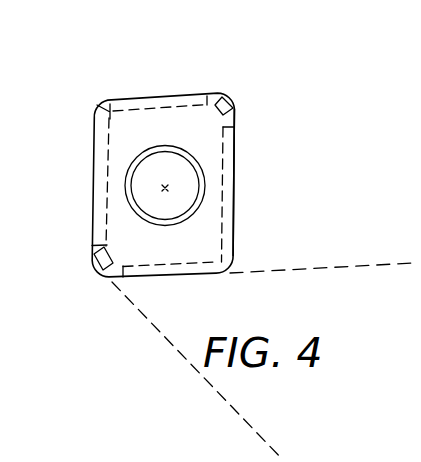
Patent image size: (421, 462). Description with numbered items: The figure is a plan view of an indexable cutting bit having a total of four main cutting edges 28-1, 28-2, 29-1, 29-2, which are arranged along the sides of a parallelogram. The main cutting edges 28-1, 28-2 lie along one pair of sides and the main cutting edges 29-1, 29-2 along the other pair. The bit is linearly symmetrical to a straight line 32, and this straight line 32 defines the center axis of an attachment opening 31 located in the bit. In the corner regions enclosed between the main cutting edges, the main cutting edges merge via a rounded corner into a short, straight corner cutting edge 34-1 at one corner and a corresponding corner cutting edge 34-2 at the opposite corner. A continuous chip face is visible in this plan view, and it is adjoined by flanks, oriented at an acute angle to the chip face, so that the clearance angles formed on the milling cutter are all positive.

The main cutting edge 28-1 is at (171, 93).
The main cutting edge 28-2 is at (191, 274).
The main cutting edge 29-1 is at (233, 203).
The main cutting edge 29-2 is at (93, 192).
The attachment opening 31 is at (199, 168).
The straight line 32 is at (166, 189).
The corner cutting edge 34-1 is at (230, 98).
The corner cutting edge 34-2 is at (105, 278).